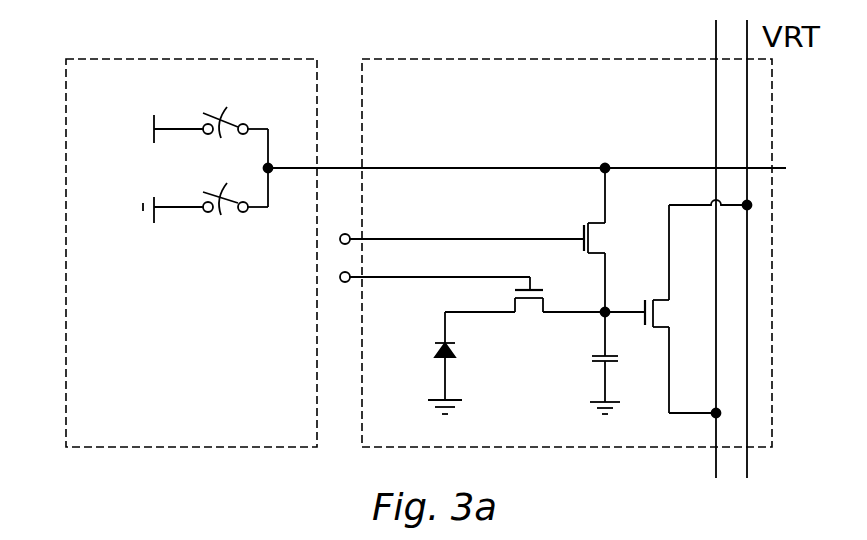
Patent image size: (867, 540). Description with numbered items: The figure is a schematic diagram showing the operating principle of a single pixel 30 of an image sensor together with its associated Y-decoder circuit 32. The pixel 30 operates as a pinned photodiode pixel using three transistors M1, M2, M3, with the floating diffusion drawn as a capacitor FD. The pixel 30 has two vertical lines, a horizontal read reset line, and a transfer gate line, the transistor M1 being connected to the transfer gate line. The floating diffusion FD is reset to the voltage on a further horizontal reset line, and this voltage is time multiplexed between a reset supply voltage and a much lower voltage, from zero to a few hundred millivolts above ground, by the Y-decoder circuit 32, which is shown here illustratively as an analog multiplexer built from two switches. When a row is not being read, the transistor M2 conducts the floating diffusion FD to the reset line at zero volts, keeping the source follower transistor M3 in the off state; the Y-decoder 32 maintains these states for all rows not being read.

The Y-decoder circuit 32 is at (92, 97).
The pixel 30 is at (589, 235).
The transistor M1 is at (445, 308).
The transistor M2 is at (492, 240).
The source follower transistor M3 is at (676, 313).
The floating diffusion FD is at (591, 363).